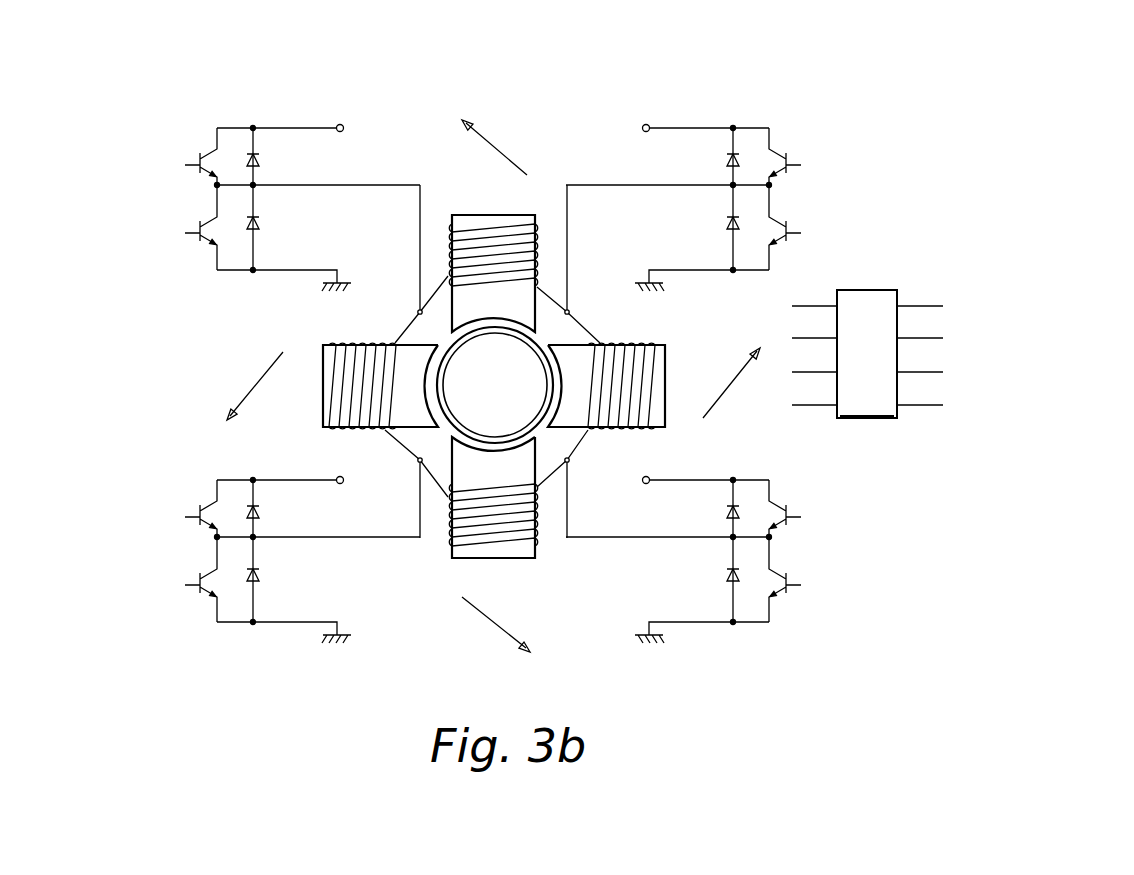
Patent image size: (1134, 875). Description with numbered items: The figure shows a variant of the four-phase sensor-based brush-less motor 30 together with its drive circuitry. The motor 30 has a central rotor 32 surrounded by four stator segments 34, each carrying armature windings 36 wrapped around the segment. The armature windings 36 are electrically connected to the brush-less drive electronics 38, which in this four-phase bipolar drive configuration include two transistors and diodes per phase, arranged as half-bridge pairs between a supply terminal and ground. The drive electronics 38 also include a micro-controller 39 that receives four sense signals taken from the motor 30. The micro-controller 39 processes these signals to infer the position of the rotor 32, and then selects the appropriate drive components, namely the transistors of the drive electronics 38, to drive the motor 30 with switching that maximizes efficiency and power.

The four-phase sensor-based brush-less motor 30 is at (590, 74).
The rotor 32 is at (484, 399).
The stator segments 34 is at (493, 552).
The armature windings 36 is at (515, 238).
The brush-less drive electronics 38 is at (873, 265).
The micro-controller 39 is at (870, 418).